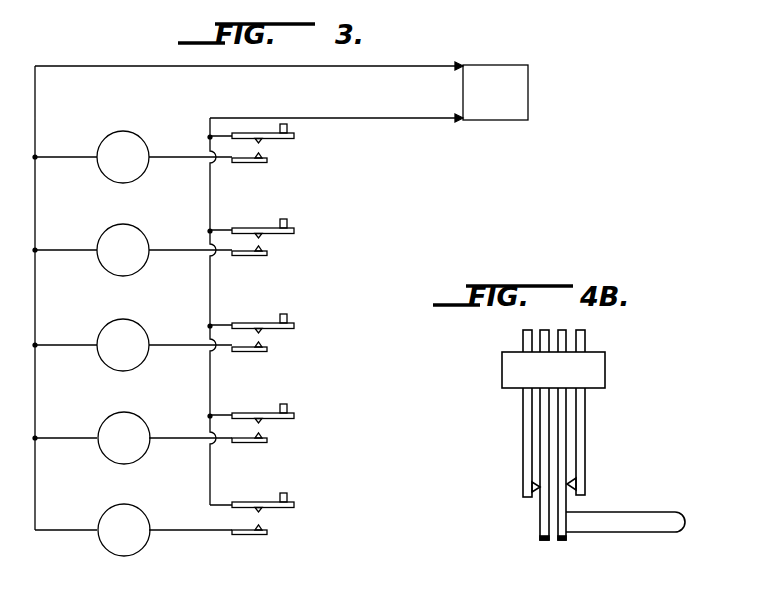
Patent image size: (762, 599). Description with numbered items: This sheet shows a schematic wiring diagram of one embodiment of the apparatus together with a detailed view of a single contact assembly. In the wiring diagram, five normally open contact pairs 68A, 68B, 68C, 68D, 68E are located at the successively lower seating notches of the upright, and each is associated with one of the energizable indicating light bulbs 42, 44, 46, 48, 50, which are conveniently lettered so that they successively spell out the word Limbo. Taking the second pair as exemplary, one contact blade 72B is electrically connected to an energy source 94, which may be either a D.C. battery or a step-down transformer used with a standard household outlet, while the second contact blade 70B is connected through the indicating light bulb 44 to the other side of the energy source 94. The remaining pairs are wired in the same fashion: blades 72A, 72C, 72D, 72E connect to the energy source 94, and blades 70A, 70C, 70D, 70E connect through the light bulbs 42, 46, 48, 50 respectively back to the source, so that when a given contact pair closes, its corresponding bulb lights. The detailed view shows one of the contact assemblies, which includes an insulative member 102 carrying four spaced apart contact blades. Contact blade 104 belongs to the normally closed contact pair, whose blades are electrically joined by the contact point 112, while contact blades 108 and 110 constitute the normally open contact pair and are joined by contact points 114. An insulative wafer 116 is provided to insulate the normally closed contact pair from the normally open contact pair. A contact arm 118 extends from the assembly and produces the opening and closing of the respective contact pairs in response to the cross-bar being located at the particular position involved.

In FIG. 3, the light bulb 42 is at (134, 122).
In FIG. 3, the light bulb 44 is at (140, 216).
In FIG. 3, the light bulb 46 is at (140, 313).
In FIG. 3, the light bulb 48 is at (146, 406).
In FIG. 3, the light bulb 50 is at (128, 505).
In FIG. 3, the normally open contact pair 68A is at (295, 144).
In FIG. 3, the normally open contact pair 68B is at (289, 245).
In FIG. 3, the normally open contact pair 68C is at (288, 339).
In FIG. 3, the normally open contact pair 68D is at (288, 429).
In FIG. 3, the normally open contact pair 68E is at (289, 521).
In FIG. 3, the contact blade 72A is at (238, 133).
In FIG. 3, the contact blade 72B is at (248, 226).
In FIG. 3, the contact blade 72C is at (272, 323).
In FIG. 3, the contact blade 72D is at (273, 413).
In FIG. 3, the contact blade 72E is at (273, 502).
In FIG. 3, the second contact blade 70A is at (240, 163).
In FIG. 3, the second contact blade 70B is at (248, 256).
In FIG. 3, the second contact blade 70C is at (230, 353).
In FIG. 3, the second contact blade 70D is at (230, 445).
In FIG. 3, the second contact blade 70E is at (232, 537).
In FIG. 3, the energy source 94 is at (512, 103).
In FIG. 4B, the insulative member 102 is at (607, 372).
In FIG. 4B, the contact blade 104 is at (587, 433).
In FIG. 4B, the contact blade 108 is at (541, 522).
In FIG. 4B, the contact blade 110 is at (519, 428).
In FIG. 4B, the contact point 112 is at (574, 480).
In FIG. 4B, the contact points 114 is at (537, 491).
In FIG. 4B, the insulative wafer 116 is at (556, 540).
In FIG. 4B, the contact arm 118 is at (645, 502).